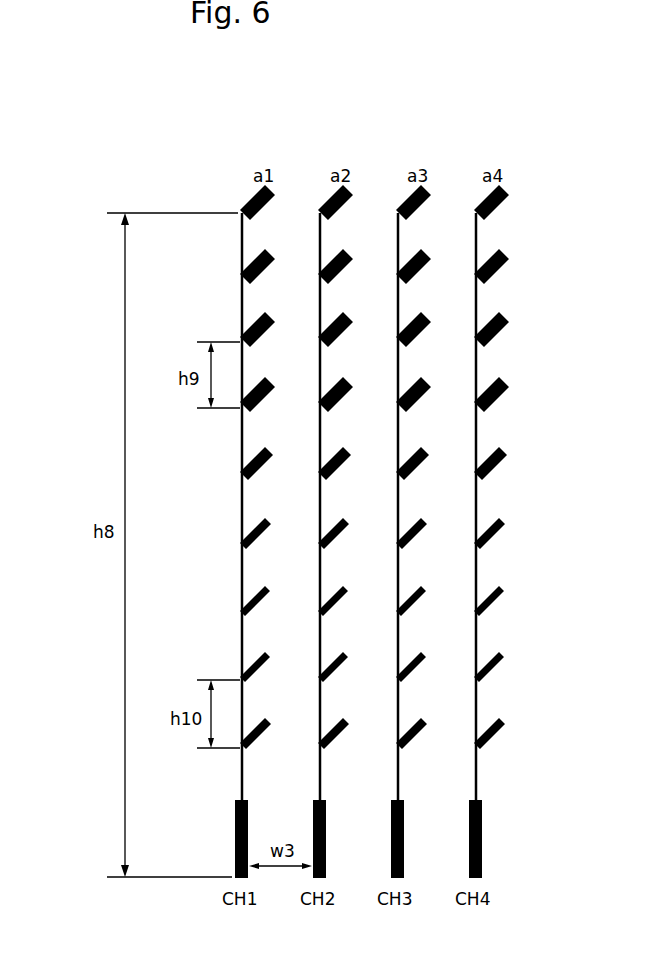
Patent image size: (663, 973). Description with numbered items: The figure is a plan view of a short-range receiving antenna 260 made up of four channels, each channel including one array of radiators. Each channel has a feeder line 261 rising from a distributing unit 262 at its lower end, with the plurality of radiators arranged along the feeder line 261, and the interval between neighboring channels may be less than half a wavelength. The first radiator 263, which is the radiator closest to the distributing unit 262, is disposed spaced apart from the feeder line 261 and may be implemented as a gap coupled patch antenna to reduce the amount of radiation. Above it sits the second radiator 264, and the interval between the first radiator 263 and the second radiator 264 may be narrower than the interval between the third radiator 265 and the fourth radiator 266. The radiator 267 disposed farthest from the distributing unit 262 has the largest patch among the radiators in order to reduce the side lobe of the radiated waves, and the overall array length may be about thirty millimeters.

The short-range receiving antenna 260 is at (71, 105).
The feeder line 261 is at (240, 777).
The distributing unit 262 is at (235, 855).
The first radiator 263 is at (270, 735).
The second radiator 264 is at (268, 673).
The third radiator 265 is at (272, 408).
The fourth radiator 266 is at (272, 340).
The farthest radiator 267 is at (273, 203).